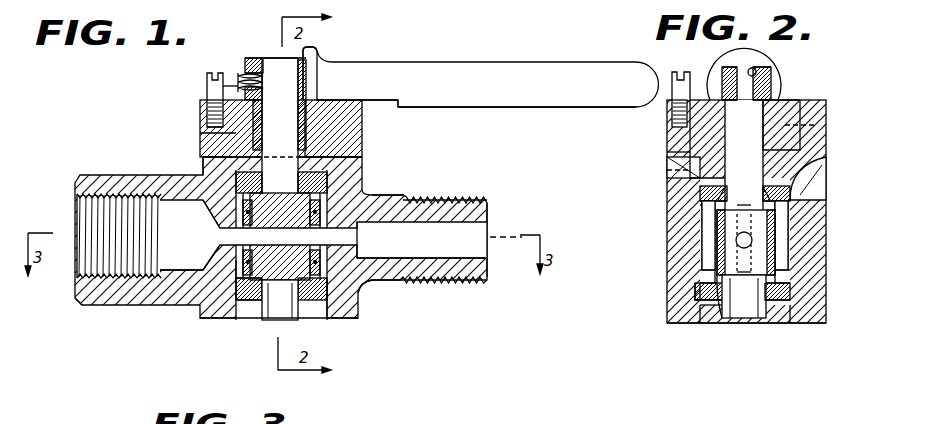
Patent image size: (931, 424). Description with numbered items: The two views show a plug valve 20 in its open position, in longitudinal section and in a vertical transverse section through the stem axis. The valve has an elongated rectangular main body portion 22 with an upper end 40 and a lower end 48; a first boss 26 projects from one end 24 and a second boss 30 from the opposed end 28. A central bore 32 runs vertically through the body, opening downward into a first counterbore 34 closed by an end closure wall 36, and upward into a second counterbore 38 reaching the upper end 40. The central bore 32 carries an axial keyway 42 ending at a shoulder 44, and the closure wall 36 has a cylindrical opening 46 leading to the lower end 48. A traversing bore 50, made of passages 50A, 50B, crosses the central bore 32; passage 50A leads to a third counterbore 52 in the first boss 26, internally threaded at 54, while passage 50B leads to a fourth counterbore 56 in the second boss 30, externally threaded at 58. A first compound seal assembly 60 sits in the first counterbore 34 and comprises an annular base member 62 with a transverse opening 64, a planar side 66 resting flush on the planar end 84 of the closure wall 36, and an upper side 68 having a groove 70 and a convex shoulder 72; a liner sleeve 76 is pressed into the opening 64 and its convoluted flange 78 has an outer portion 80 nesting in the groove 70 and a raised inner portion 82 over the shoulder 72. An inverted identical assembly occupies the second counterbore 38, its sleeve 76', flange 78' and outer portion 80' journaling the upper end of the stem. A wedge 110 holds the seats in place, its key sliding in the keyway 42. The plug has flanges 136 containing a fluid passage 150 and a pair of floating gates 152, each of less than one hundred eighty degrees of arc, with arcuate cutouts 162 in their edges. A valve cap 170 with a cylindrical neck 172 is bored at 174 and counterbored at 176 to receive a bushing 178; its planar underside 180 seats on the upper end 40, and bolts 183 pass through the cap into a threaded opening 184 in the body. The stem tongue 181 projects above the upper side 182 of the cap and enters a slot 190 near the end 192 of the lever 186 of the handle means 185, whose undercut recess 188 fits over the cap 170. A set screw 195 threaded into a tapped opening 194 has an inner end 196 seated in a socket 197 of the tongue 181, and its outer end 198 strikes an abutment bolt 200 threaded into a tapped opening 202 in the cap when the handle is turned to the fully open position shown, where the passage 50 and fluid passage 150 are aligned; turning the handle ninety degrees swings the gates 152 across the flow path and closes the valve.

In FIG. 1, the plug valve 20 is at (152, 130).
In FIG. 1, the main body portion 22 is at (371, 181).
In FIG. 2, the main body portion 22 is at (660, 225).
In FIG. 1, the one end of main body portion 24 is at (202, 164).
In FIG. 1, the first boss 26 is at (104, 175).
In FIG. 1, the opposed end of main body portion 28 is at (361, 319).
In FIG. 1, the second boss 30 is at (488, 283).
In FIG. 1, the central bore 32 is at (217, 290).
In FIG. 2, the central bore 32 is at (700, 268).
In FIG. 1, the first counterbore 34 is at (322, 310).
In FIG. 1, the end closure wall 36 is at (246, 313).
In FIG. 2, the end closure wall 36 is at (720, 318).
In FIG. 1, the second counterbore 38 is at (333, 176).
In FIG. 2, the second counterbore 38 is at (700, 173).
In FIG. 1, the upper end of main body portion 40 is at (214, 153).
In FIG. 2, the upper end of main body portion 40 is at (667, 153).
In FIG. 2, the keyway 42 is at (700, 204).
In FIG. 2, the shoulder 44 is at (703, 238).
In FIG. 1, the cylindrical opening 46 is at (291, 300).
In FIG. 2, the cylindrical opening 46 is at (758, 324).
In FIG. 1, the lower end of main body portion 48 is at (325, 320).
In FIG. 2, the lower end of main body portion 48 is at (753, 205).
In FIG. 1, the traversing bore 50 is at (333, 232).
In FIG. 1, the passage 50A is at (231, 248).
In FIG. 1, the passage 50B is at (358, 256).
In FIG. 1, the third counterbore 52 is at (175, 278).
In FIG. 1, the internal threads 54 is at (80, 283).
In FIG. 1, the fourth counterbore 56 is at (466, 200).
In FIG. 1, the external threads 58 is at (448, 283).
In FIG. 1, the first compound gasket or seal assembly 60 is at (245, 312).
In FIG. 2, the first compound gasket or seal assembly 60 is at (700, 297).
In FIG. 1, the annular base member 62 is at (255, 315).
In FIG. 2, the annular base member 62 is at (782, 188).
In FIG. 2, the coaxial transverse opening 64 is at (790, 292).
In FIG. 1, the planar side 66 is at (359, 288).
In FIG. 2, the planar side 66 is at (790, 297).
In FIG. 1, the upper side 68 is at (240, 296).
In FIG. 2, the upper side 68 is at (703, 284).
In FIG. 1, the preformed groove 70 is at (236, 300).
In FIG. 2, the preformed groove 70 is at (707, 281).
In FIG. 1, the convex shoulder 72 is at (266, 298).
In FIG. 2, the convex shoulder 72 is at (700, 303).
In FIG. 1, the cylindrical sleeve 76 is at (281, 319).
In FIG. 2, the cylindrical sleeve 76 is at (736, 321).
In FIG. 2, the cylindrical sleeve of second seal assembly 76' is at (744, 173).
In FIG. 1, the flange 78 is at (422, 251).
In FIG. 2, the flange of second seal assembly 78' is at (709, 196).
In FIG. 2, the outer concave-convex portion 80 is at (811, 269).
In FIG. 2, the outer concave-convex portion of second seal assembly 80' is at (812, 239).
In FIG. 2, the raised inner concave-convex portion 82 is at (762, 270).
In FIG. 2, the inner planar end of end closure wall 84 is at (723, 314).
In FIG. 2, the wedge 110 is at (690, 228).
In FIG. 2, the flanges 136 is at (740, 206).
In FIG. 2, the fluid passage 150 is at (752, 240).
In FIG. 2, the floating gates 152 is at (738, 318).
In FIG. 2, the arcuate cutout 162 is at (710, 257).
In FIG. 1, the valve cap 170 is at (368, 100).
In FIG. 1, the cylindrical neck 172 is at (238, 166).
In FIG. 1, the bore of cap 174 is at (278, 153).
In FIG. 1, the counterbore of cap 176 is at (316, 100).
In FIG. 1, the bushing 178 is at (279, 105).
In FIG. 1, the planar underside of cap 180 is at (338, 172).
In FIG. 1, the tongue 181 is at (317, 58).
In FIG. 1, the upper side of cap 182 is at (343, 100).
In FIG. 2, the bolts 183 is at (815, 101).
In FIG. 2, the internally threaded opening 184 is at (667, 168).
In FIG. 1, the handle means 185 is at (542, 46).
In FIG. 2, the handle means 185 is at (780, 46).
In FIG. 1, the lever 186 is at (456, 112).
In FIG. 2, the lever 186 is at (737, 66).
In FIG. 1, the undercut planar recess 188 is at (400, 101).
In FIG. 2, the undercut planar recess 188 is at (771, 95).
In FIG. 1, the rectangular slot 190 is at (265, 57).
In FIG. 2, the rectangular slot 190 is at (773, 66).
In FIG. 1, the end of handle means 192 is at (245, 62).
In FIG. 1, the tapped opening 194 is at (247, 60).
In FIG. 1, the set screw 195 is at (228, 70).
In FIG. 1, the inner end of set screw 196 is at (263, 96).
In FIG. 1, the socket 197 is at (263, 83).
In FIG. 1, the outer end of set screw 198 is at (206, 86).
In FIG. 1, the abutment bolt 200 is at (208, 98).
In FIG. 2, the abutment bolt 200 is at (677, 72).
In FIG. 1, the tapped opening in cap 202 is at (208, 118).